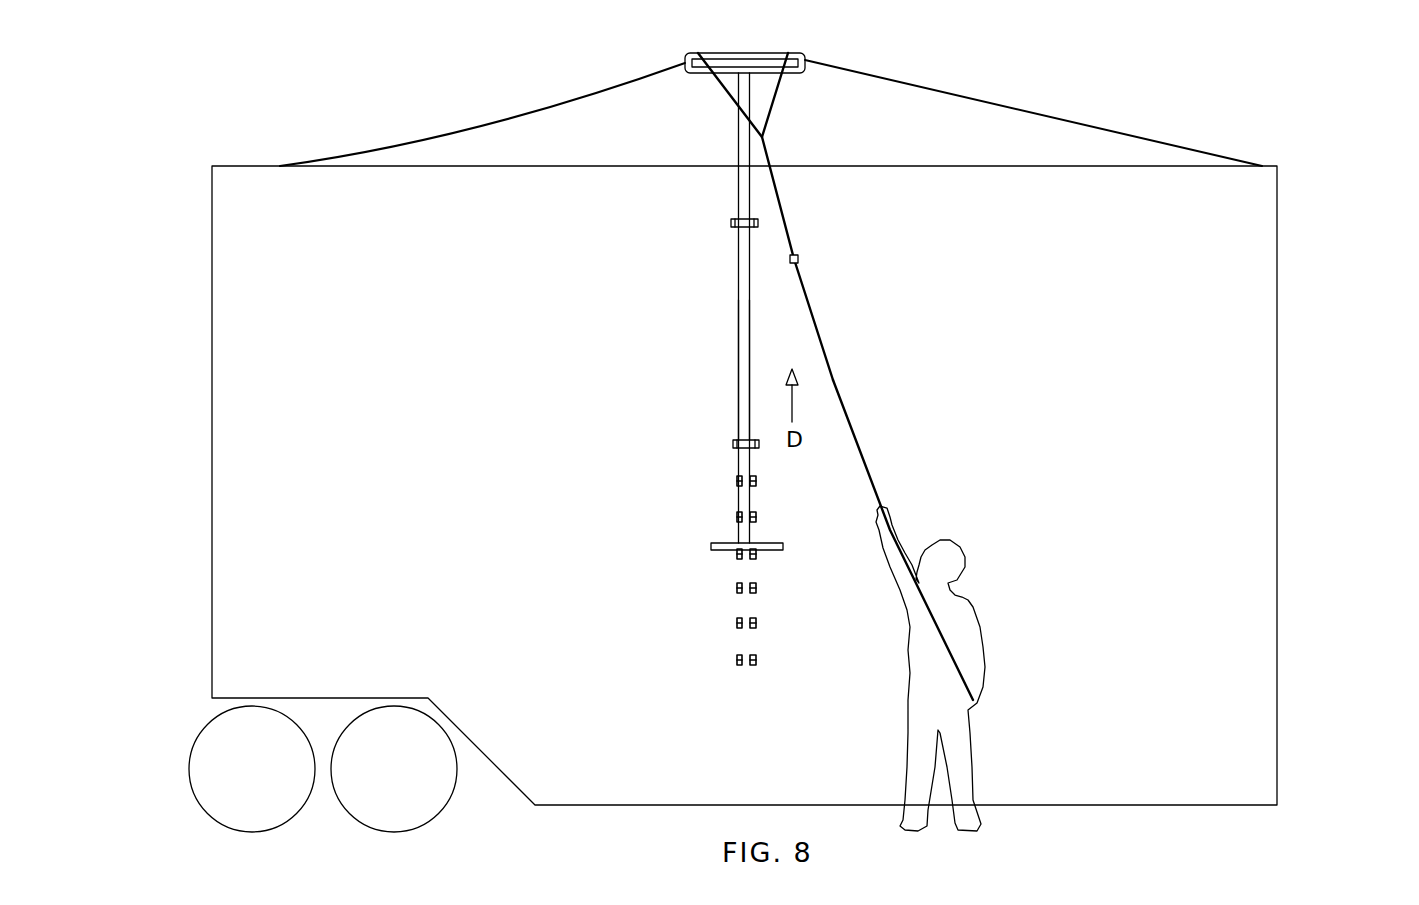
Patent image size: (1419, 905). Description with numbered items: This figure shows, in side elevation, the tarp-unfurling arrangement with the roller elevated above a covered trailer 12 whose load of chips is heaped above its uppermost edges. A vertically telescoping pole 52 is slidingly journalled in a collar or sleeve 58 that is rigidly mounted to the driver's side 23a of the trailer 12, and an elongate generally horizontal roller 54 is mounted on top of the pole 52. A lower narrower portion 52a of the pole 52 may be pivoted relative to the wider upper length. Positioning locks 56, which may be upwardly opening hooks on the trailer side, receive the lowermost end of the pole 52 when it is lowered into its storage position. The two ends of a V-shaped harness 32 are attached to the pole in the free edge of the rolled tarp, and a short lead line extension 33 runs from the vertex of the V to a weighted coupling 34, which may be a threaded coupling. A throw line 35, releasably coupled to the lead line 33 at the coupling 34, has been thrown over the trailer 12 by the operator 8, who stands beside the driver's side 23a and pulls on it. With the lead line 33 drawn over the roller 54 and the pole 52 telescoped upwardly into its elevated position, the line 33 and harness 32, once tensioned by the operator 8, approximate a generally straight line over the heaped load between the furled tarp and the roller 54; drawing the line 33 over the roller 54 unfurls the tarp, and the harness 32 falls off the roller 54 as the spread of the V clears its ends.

The operator 8 is at (963, 650).
The trailer 12 is at (791, 499).
The driver's side 23a is at (1157, 511).
The V-shaped harness 32 is at (968, 97).
The lead line extension 33 is at (783, 218).
The weighted coupling 34 is at (797, 263).
The throw line 35 is at (853, 428).
The vertically telescoping pole 52 is at (744, 196).
The lower narrower portion of pole 52a is at (740, 370).
The roller 54 is at (687, 80).
The positioning locks 56 is at (735, 588).
The collar or sleeve 58 is at (733, 224).